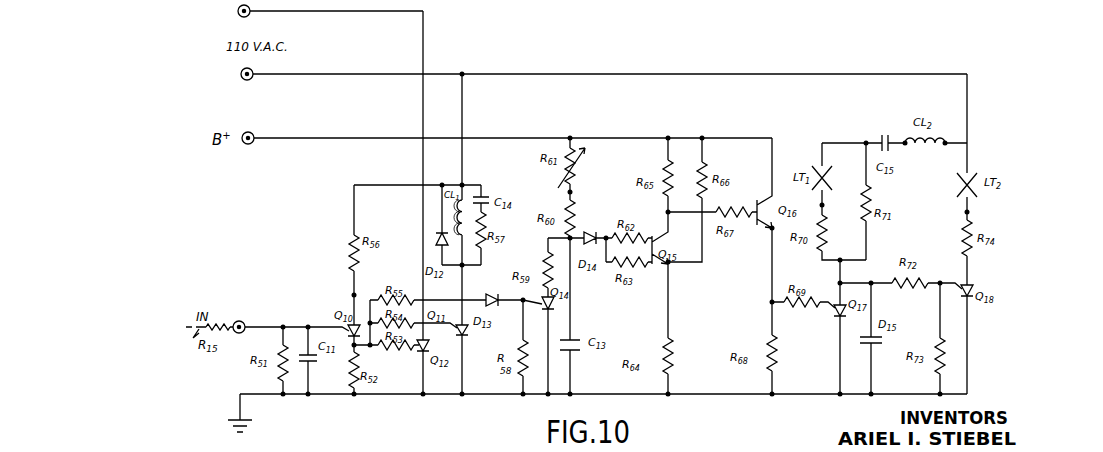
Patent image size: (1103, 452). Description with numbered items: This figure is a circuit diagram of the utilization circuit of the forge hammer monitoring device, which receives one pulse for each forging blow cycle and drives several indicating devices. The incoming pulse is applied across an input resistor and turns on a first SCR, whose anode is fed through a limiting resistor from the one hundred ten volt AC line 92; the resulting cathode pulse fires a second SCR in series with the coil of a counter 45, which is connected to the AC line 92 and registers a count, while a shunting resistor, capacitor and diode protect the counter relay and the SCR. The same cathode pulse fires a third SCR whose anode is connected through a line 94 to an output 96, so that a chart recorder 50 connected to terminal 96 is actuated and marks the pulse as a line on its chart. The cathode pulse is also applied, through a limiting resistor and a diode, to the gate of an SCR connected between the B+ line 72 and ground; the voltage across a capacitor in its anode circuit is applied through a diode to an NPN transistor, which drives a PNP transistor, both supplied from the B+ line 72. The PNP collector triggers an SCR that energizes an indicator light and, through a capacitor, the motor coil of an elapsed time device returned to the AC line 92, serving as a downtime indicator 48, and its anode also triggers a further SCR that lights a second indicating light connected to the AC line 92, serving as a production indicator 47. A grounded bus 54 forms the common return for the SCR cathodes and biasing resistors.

The output 96 is at (237, 13).
The line 94 is at (423, 38).
The 110 volt AC line 92 is at (519, 74).
The B+ line 72 is at (386, 138).
The counter 45 is at (469, 196).
The downtime indicator 48 is at (816, 156).
The production indicator 47 is at (983, 162).
The recorder 50 is at (437, 383).
The ground bus 54 is at (406, 396).